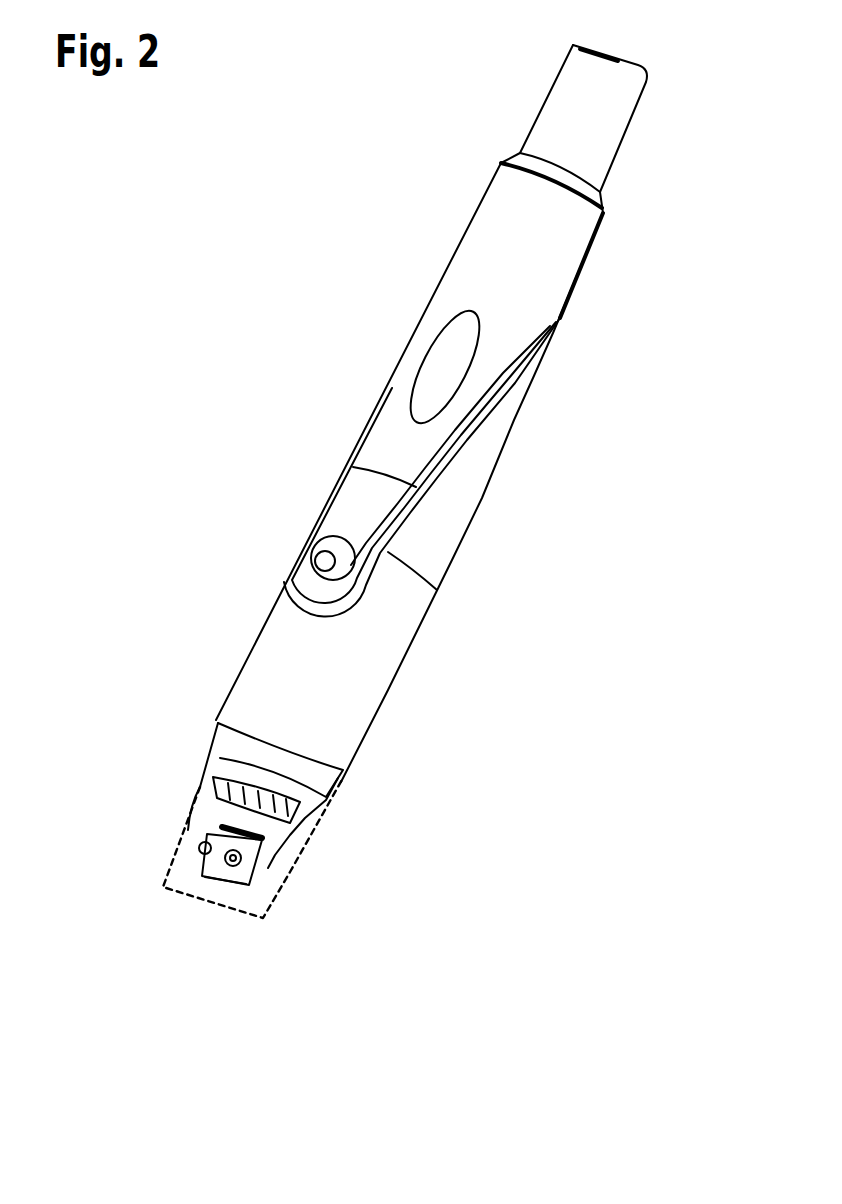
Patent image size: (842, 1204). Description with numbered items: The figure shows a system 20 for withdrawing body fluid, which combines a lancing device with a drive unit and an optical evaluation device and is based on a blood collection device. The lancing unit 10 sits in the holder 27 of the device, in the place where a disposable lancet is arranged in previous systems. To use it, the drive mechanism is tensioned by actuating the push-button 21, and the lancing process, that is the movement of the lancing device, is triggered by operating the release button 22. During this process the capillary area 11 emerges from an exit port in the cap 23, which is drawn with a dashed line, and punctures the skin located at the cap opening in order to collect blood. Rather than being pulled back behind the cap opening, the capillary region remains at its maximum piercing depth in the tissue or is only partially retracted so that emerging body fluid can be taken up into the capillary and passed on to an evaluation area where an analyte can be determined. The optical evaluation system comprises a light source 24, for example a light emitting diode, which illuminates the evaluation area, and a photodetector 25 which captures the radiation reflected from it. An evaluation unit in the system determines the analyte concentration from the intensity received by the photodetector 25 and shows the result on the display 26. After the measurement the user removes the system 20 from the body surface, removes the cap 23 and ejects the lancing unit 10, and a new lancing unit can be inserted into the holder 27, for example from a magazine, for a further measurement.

The lancing unit 10 is at (268, 869).
The capillary area 11 is at (228, 880).
The system for withdrawing body fluid 20 is at (409, 304).
The push-button 21 is at (583, 132).
The release button 22 is at (318, 557).
The cap 23 is at (182, 845).
The light source 24 is at (200, 849).
The photodetector 25 is at (252, 872).
The display 26 is at (445, 379).
The holder 27 is at (207, 812).